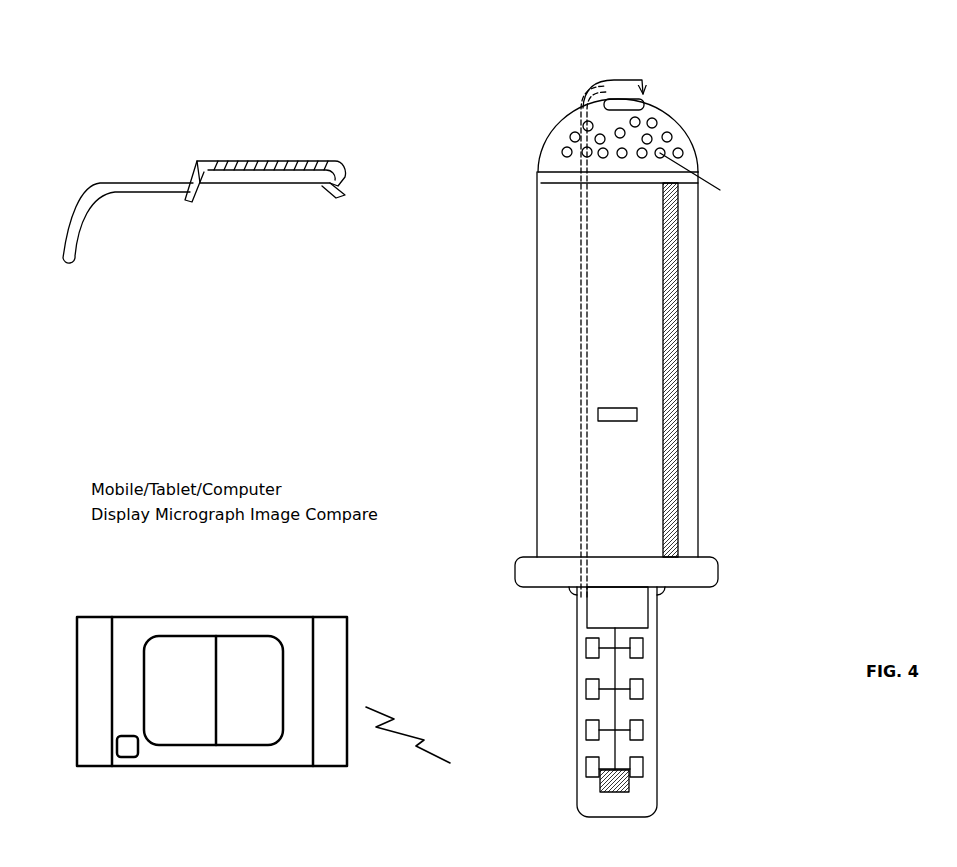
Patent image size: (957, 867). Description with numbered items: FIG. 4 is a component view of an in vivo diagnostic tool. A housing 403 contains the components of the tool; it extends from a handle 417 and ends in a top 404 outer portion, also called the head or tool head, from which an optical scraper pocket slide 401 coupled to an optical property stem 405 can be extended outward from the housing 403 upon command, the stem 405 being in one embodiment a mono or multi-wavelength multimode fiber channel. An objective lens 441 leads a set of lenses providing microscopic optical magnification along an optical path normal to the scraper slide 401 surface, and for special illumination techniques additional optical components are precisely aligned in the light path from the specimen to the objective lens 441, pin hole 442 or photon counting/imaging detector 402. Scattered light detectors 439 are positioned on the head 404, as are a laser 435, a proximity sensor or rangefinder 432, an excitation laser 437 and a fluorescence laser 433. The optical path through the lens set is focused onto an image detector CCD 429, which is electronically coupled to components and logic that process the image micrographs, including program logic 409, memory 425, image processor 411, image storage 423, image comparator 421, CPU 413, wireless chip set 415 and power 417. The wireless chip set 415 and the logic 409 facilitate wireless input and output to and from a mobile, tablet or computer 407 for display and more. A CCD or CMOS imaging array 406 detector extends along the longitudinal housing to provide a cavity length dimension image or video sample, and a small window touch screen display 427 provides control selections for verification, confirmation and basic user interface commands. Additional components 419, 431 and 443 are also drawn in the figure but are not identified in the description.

The optical scraper pocket slide 401 is at (596, 73).
The photon counting/imaging detector 402 is at (518, 184).
The housing 403 is at (563, 379).
The top outer portion 404 is at (570, 146).
The optical property stem 405 is at (524, 341).
The CCD or CMOS imaging array 406 is at (558, 421).
The mobile, tablet or computer 407 is at (246, 606).
The program logic 409 is at (563, 643).
The image processor 411 is at (563, 691).
The CPU 413 is at (561, 730).
The wireless chip set 415 is at (562, 769).
The handle 417 is at (596, 792).
The button 419 is at (676, 775).
The image comparator 421 is at (680, 734).
The image storage 423 is at (685, 694).
The memory 425 is at (675, 651).
The touch screen display 427 is at (672, 702).
The image detector CCD 429 is at (637, 407).
The light emitting diode 431 is at (679, 199).
The proximity sensor or rangefinder 432 is at (741, 355).
The fluorescence laser 433 is at (727, 181).
The laser 435 is at (716, 154).
The excitation laser 437 is at (722, 134).
The scattered light detectors 439 is at (715, 102).
The objective lens 441 is at (688, 71).
The pin hole 442 is at (584, 138).
The hook 443 is at (538, 111).